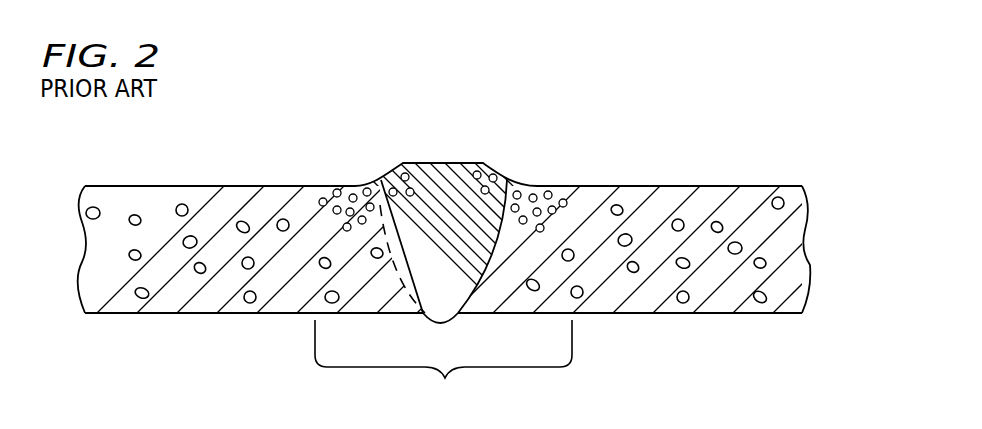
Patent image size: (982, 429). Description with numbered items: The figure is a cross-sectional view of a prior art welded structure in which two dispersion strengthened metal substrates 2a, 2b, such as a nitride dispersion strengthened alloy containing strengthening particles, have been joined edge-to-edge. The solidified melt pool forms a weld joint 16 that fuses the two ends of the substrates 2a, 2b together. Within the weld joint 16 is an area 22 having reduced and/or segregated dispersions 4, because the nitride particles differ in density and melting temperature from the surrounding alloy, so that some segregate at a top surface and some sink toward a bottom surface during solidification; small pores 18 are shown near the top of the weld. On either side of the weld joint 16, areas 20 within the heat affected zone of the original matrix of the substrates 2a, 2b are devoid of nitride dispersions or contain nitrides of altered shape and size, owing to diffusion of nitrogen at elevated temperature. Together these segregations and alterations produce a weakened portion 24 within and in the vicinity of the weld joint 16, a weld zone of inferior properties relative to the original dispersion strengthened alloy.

The dispersion strengthened metal substrate 2a is at (167, 297).
The dispersion strengthened metal substrate 2b is at (642, 297).
The dispersions 4 is at (248, 303).
The weld joint 16 is at (440, 287).
The porosity bubbles 18 is at (352, 194).
The areas within the heat affected zone 20 is at (516, 338).
The area having reduced and/or segregated dispersions 22 is at (442, 227).
The weakened portion 24 is at (445, 380).